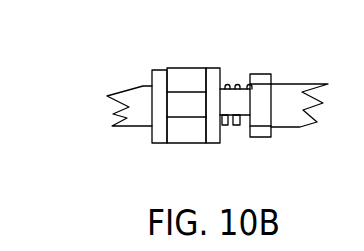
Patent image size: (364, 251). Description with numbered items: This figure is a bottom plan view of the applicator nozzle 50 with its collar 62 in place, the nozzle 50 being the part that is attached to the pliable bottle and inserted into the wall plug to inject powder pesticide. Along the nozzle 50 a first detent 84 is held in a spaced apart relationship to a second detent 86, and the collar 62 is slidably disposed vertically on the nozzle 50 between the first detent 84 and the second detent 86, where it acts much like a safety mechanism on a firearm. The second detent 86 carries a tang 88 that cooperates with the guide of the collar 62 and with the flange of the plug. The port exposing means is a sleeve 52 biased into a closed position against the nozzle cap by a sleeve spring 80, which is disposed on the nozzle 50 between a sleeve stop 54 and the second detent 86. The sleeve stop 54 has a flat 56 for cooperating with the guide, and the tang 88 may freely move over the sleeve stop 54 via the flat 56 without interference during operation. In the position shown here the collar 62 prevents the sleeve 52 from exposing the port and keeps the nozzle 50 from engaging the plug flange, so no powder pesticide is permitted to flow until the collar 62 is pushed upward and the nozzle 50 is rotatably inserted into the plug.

The nozzle 50 is at (117, 145).
The sleeve 52 is at (293, 83).
The sleeve stop 54 is at (266, 73).
The flat 56 is at (259, 104).
The collar 62 is at (179, 66).
The sleeve spring 80 is at (234, 88).
The first detent 84 is at (157, 144).
The second detent 86 is at (213, 67).
The tang 88 is at (227, 103).